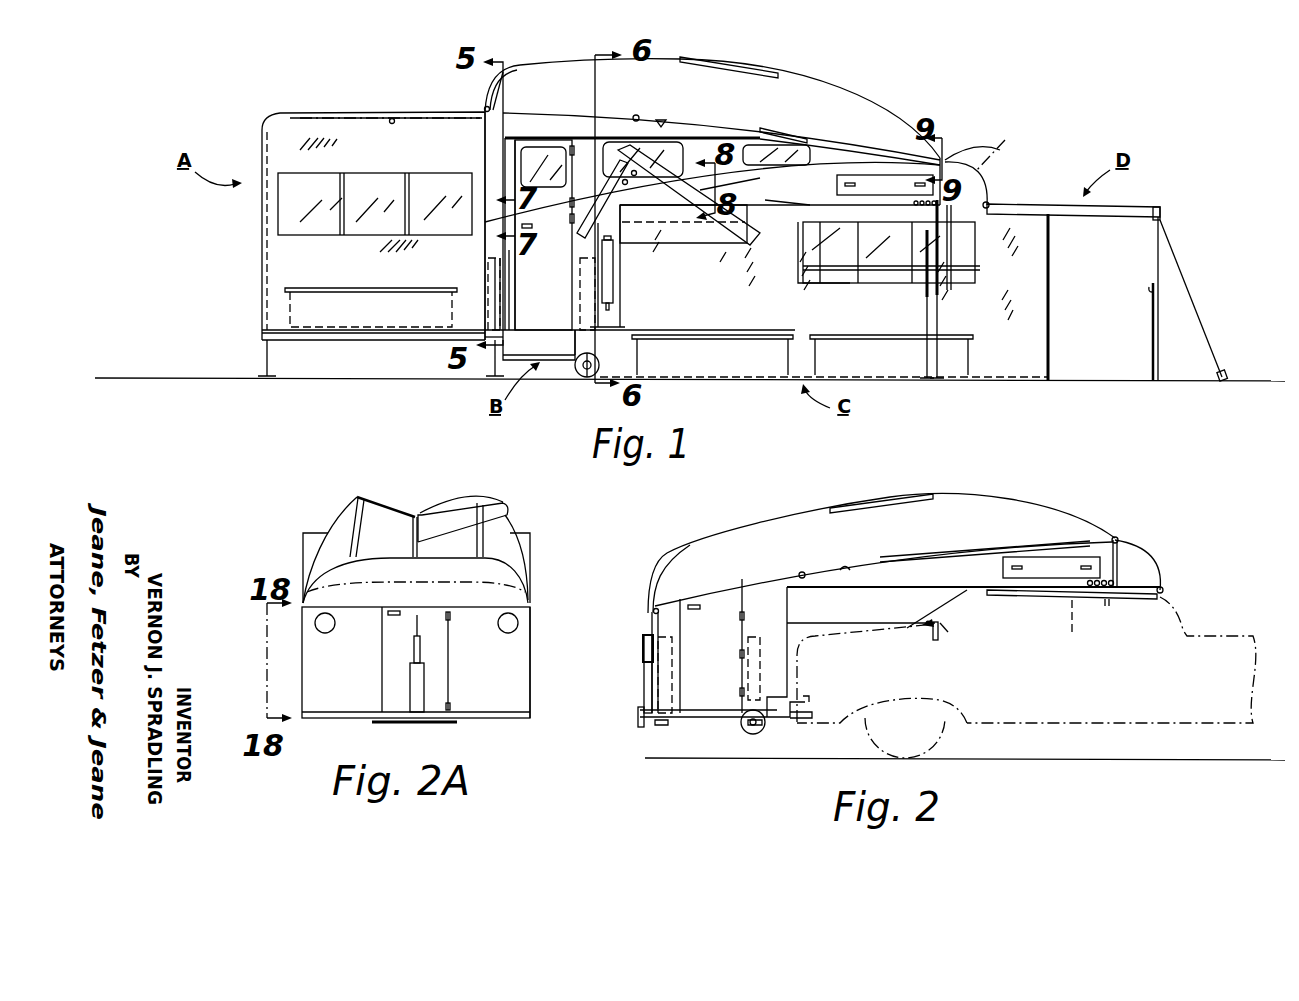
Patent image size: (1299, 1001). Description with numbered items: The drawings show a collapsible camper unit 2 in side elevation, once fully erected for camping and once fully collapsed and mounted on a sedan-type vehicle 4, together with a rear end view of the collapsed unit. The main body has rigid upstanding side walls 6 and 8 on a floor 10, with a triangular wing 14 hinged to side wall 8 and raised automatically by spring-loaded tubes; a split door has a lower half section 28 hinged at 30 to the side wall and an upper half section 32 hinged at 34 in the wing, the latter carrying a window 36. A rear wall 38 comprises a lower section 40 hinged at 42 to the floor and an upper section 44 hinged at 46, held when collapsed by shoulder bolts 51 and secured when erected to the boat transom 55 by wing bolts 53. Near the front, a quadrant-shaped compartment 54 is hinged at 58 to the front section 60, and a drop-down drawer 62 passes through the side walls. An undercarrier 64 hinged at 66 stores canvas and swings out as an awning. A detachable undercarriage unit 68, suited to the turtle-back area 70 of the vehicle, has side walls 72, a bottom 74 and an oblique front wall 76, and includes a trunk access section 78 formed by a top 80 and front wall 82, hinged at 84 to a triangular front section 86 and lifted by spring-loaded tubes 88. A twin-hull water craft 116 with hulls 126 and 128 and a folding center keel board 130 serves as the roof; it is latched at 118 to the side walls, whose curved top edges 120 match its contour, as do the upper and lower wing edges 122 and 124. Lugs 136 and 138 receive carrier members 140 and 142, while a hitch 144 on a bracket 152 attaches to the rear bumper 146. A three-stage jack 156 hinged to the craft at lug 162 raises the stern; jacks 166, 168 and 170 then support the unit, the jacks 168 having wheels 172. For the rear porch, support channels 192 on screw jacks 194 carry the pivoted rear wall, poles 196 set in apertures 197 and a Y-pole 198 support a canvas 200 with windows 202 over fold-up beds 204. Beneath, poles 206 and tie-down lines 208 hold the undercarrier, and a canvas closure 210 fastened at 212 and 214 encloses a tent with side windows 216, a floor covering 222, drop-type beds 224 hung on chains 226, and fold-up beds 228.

In FIG. 2, the camper unit 2 is at (1120, 525).
In FIG. 2, the vehicle 4 is at (1205, 604).
In FIG. 2A, the side wall 6 is at (302, 650).
In FIG. 1, the side wall 8 is at (490, 252).
In FIG. 2A, the side wall 8 is at (530, 662).
In FIG. 2, the side wall 8 is at (658, 628).
In FIG. 2A, the floor 10 is at (478, 720).
In FIG. 2, the floor 10 is at (673, 727).
In FIG. 1, the wing 14 is at (873, 157).
In FIG. 1, the lower half section 28 is at (520, 290).
In FIG. 2, the lower half section 28 is at (720, 705).
In FIG. 1, the hinge 30 is at (572, 238).
In FIG. 2, the hinge 30 is at (740, 654).
In FIG. 1, the upper half section 32 is at (508, 168).
In FIG. 1, the hinge 34 is at (571, 146).
In FIG. 1, the window 36 is at (544, 157).
In FIG. 1, the rear wall 38 is at (480, 133).
In FIG. 1, the lower section 40 is at (487, 274).
In FIG. 2A, the lower section 40 is at (515, 700).
In FIG. 1, the hinge 42 is at (482, 332).
In FIG. 1, the upper section 44 is at (483, 177).
In FIG. 1, the hinge 46 is at (508, 235).
In FIG. 2, the shoulder bolts 51 is at (652, 612).
In FIG. 1, the wing bolts 53 is at (495, 108).
In FIG. 1, the compartment 54 is at (1003, 147).
In FIG. 2, the compartment 54 is at (1142, 550).
In FIG. 1, the transom 55 is at (484, 102).
In FIG. 1, the hinge 58 is at (946, 160).
In FIG. 2, the hinge 58 is at (1118, 538).
In FIG. 2, the front section 60 is at (1108, 560).
In FIG. 1, the drawer 62 is at (837, 186).
In FIG. 2, the drawer 62 is at (1003, 566).
In FIG. 1, the undercarrier 64 is at (1107, 210).
In FIG. 2, the undercarrier 64 is at (1072, 619).
In FIG. 1, the hinge 66 is at (992, 204).
In FIG. 2, the hinge 66 is at (1165, 589).
In FIG. 1, the undercarriage unit 68 is at (768, 238).
In FIG. 2, the undercarriage unit 68 is at (934, 626).
In FIG. 2, the turtle-back rear area 70 is at (857, 640).
In FIG. 2, the side walls 72 is at (882, 597).
In FIG. 2, the bottom 74 is at (826, 623).
In FIG. 2, the front wall 76 is at (965, 600).
In FIG. 1, the trunk access section 78 is at (706, 236).
In FIG. 1, the top 80 is at (740, 212).
In FIG. 1, the front wall 82 is at (614, 176).
In FIG. 1, the hinge 84 is at (746, 242).
In FIG. 1, the front section 86 is at (783, 220).
In FIG. 1, the spring-loaded tubes 88 is at (613, 294).
In FIG. 1, the water craft 116 is at (822, 94).
In FIG. 2A, the water craft 116 is at (330, 512).
In FIG. 2, the water craft 116 is at (698, 535).
In FIG. 1, the latch 118 is at (636, 115).
In FIG. 2, the latch 118 is at (803, 571).
In FIG. 2, the marginal top edges 120 is at (846, 567).
In FIG. 1, the upper marginal edge 122 is at (662, 118).
In FIG. 1, the lower marginal edge 124 is at (738, 173).
In FIG. 2A, the hull 126 is at (318, 557).
In FIG. 2A, the hull 128 is at (505, 550).
In FIG. 1, the center keel board 130 is at (754, 75).
In FIG. 2A, the center keel board 130 is at (451, 505).
In FIG. 2, the center keel board 130 is at (874, 505).
In FIG. 1, the front lugs 136 is at (956, 247).
In FIG. 2, the front lugs 136 is at (1110, 584).
In FIG. 2, the middle lugs 138 is at (926, 622).
In FIG. 2, the carrier member 140 is at (1108, 606).
In FIG. 2, the carrier member 142 is at (912, 638).
In FIG. 2, the hitch 144 is at (795, 702).
In FIG. 2, the rear bumper 146 is at (808, 718).
In FIG. 2, the bracket 152 is at (710, 718).
In FIG. 2A, the telescopic jack 156 is at (425, 680).
In FIG. 2, the telescopic jack 156 is at (644, 678).
In FIG. 1, the hinged lug 162 is at (477, 105).
In FIG. 1, the jacks 166 is at (942, 294).
In FIG. 1, the jacks 168 is at (598, 327).
In FIG. 2, the jacks 168 is at (757, 640).
In FIG. 1, the jacks 170 is at (493, 316).
In FIG. 2, the jacks 170 is at (647, 648).
In FIG. 1, the wheels 172 is at (576, 377).
In FIG. 2, the wheels 172 is at (758, 727).
In FIG. 1, the support channels 192 is at (340, 333).
In FIG. 2, the support channels 192 is at (636, 712).
In FIG. 1, the screw jacks 194 is at (270, 355).
In FIG. 1, the telescopic poles 196 is at (262, 262).
In FIG. 1, the apertures 197 is at (262, 333).
In FIG. 1, the telescopic Y-pole 198 is at (347, 100).
In FIG. 1, the canvas 200 is at (292, 128).
In FIG. 1, the windows 202 is at (288, 197).
In FIG. 1, the fold-up beds 204 is at (305, 288).
In FIG. 1, the telescopic poles 206 is at (1152, 340).
In FIG. 1, the tie-down lines 208 is at (1194, 304).
In FIG. 1, the canvas closure 210 is at (1037, 308).
In FIG. 1, the attachment point 212 is at (1048, 212).
In FIG. 1, the attachment point 214 is at (672, 244).
In FIG. 1, the side windows 216 is at (808, 282).
In FIG. 1, the floor covering 222 is at (713, 373).
In FIG. 1, the drop-type beds 224 is at (878, 283).
In FIG. 1, the chains 226 is at (876, 232).
In FIG. 1, the fold-up beds 228 is at (948, 340).